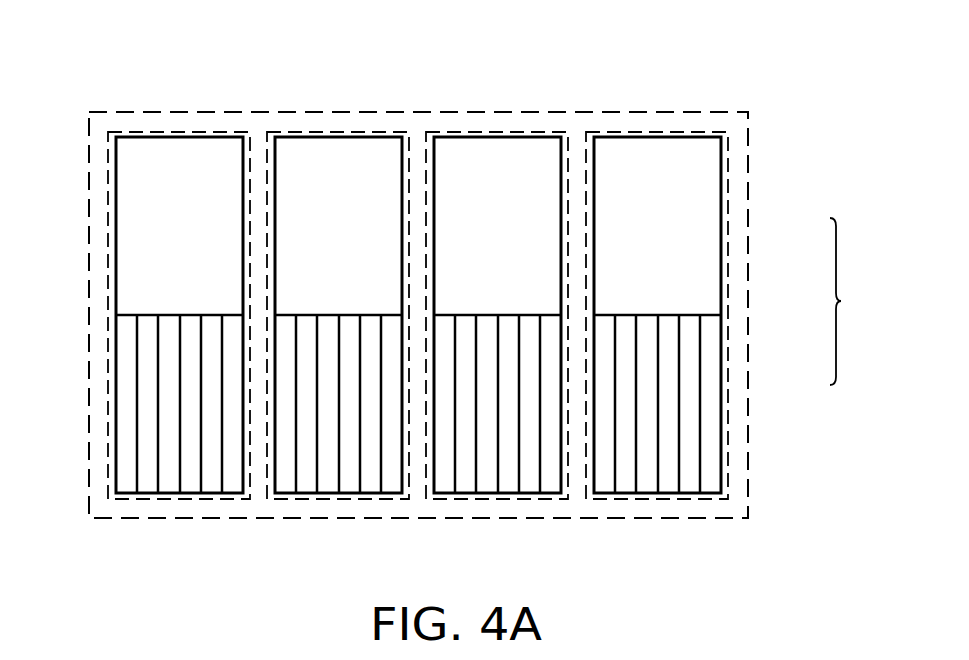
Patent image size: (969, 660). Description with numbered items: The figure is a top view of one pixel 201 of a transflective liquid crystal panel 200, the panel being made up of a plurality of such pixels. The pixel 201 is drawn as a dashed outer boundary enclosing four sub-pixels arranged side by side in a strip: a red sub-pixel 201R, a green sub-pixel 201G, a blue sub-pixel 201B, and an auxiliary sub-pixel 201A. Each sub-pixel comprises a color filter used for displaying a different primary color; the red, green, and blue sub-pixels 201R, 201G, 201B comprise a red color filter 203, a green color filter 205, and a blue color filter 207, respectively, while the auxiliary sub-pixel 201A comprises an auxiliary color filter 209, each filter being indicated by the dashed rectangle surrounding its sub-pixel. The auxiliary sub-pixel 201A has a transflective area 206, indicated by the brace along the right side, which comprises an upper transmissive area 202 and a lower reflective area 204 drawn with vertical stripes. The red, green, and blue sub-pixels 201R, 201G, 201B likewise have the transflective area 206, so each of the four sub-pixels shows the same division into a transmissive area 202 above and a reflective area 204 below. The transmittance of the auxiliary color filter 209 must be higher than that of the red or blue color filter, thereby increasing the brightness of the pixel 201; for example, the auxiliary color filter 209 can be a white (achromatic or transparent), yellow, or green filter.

The liquid crystal panel 200 is at (77, 42).
The pixel 201 is at (722, 112).
The red color filter 203 is at (138, 132).
The green color filter 205 is at (298, 131).
The blue color filter 207 is at (457, 131).
The auxiliary color filter 209 is at (637, 131).
The red sub-pixel 201R is at (188, 493).
The green sub-pixel 201G is at (348, 493).
The blue sub-pixel 201B is at (508, 493).
The auxiliary sub-pixel 201A is at (667, 493).
The transmissive area 202 is at (700, 229).
The reflective area 204 is at (700, 375).
The transflective area 206 is at (857, 301).